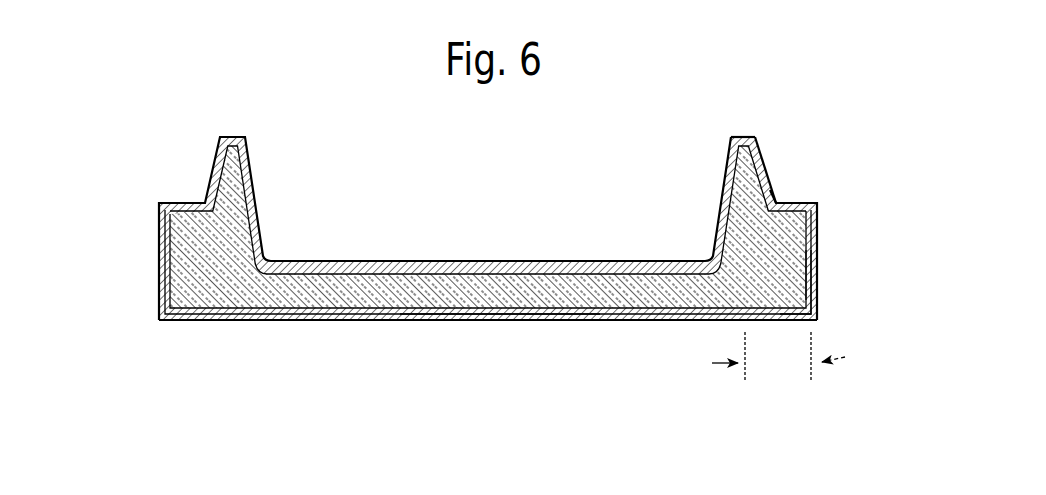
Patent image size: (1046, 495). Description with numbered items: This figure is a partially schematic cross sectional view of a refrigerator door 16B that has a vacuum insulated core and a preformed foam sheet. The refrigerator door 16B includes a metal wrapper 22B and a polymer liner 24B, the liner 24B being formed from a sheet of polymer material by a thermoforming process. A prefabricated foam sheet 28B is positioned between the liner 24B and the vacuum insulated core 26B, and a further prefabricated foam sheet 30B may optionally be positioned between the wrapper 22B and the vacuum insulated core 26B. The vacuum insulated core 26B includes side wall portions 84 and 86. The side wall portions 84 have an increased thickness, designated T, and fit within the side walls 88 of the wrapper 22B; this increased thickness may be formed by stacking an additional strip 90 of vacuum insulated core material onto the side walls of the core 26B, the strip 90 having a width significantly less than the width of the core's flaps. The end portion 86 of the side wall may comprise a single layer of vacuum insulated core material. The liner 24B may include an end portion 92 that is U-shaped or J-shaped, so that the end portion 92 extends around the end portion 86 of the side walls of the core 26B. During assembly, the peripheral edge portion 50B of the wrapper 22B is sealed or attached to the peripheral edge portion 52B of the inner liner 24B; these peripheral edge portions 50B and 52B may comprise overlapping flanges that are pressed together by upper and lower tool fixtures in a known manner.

The refrigerator door 16B is at (535, 239).
The metal wrapper 22B is at (574, 330).
The polymer liner 24B is at (372, 252).
The vacuum insulated core 26B is at (340, 297).
The prefabricated foam sheet 28B is at (468, 260).
The bottom layer 30B is at (488, 310).
The peripheral edge portion of wrapper 50B is at (802, 202).
The peripheral edge portion of inner liner 52B is at (775, 201).
The side wall portion 84 is at (788, 272).
The end portion of the side wall 86 is at (761, 160).
The side walls of wrapper 88 is at (819, 242).
The additional strip 90 is at (789, 294).
The end portion of liner 92 is at (743, 136).